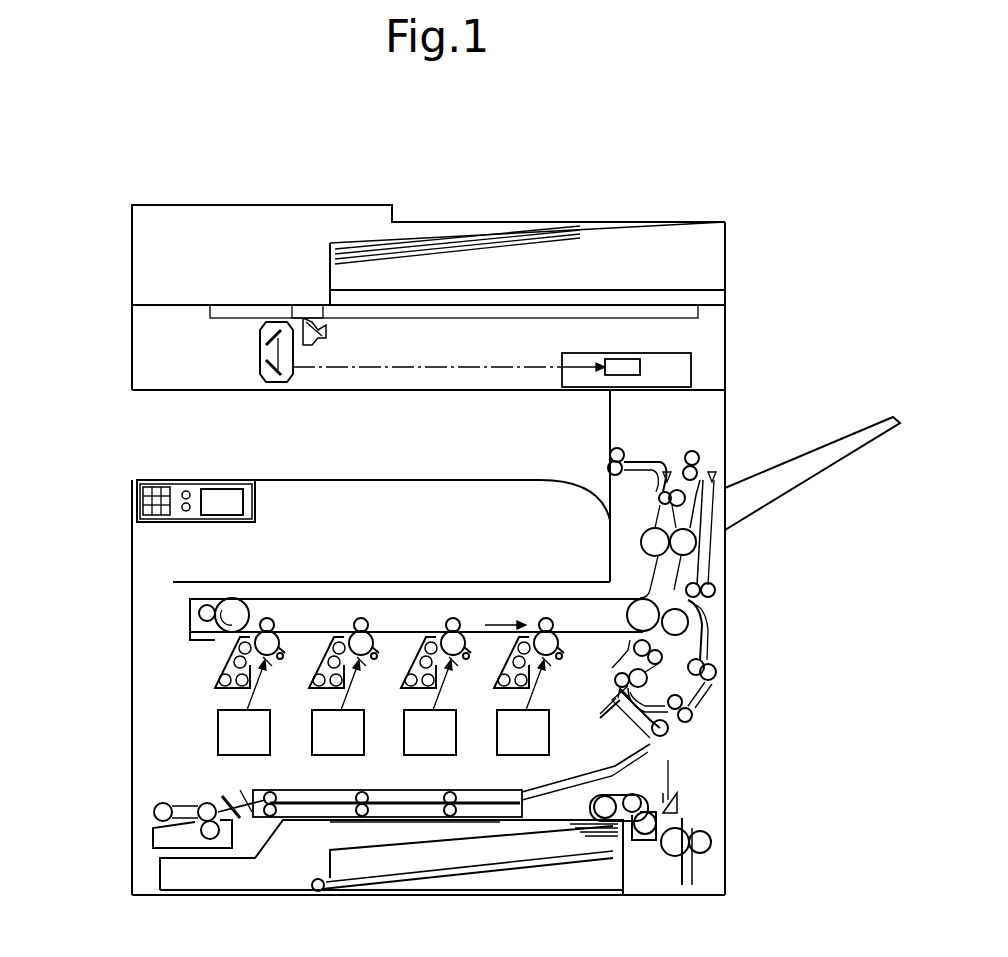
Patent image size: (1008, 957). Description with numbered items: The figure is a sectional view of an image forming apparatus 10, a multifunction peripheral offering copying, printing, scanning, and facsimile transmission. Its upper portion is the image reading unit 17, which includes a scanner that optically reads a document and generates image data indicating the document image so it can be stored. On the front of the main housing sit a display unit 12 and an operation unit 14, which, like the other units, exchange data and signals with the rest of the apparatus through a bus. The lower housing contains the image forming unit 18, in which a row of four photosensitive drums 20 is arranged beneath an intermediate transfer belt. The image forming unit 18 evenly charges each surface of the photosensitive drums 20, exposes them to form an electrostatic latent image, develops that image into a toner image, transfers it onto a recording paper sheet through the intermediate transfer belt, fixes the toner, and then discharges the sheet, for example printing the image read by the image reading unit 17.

The image forming apparatus 10 is at (418, 135).
The display unit 12 is at (222, 487).
The operation unit 14 is at (165, 520).
The image reading unit 17 is at (726, 268).
The image forming unit 18 is at (175, 670).
The photosensitive drums 20 is at (357, 635).